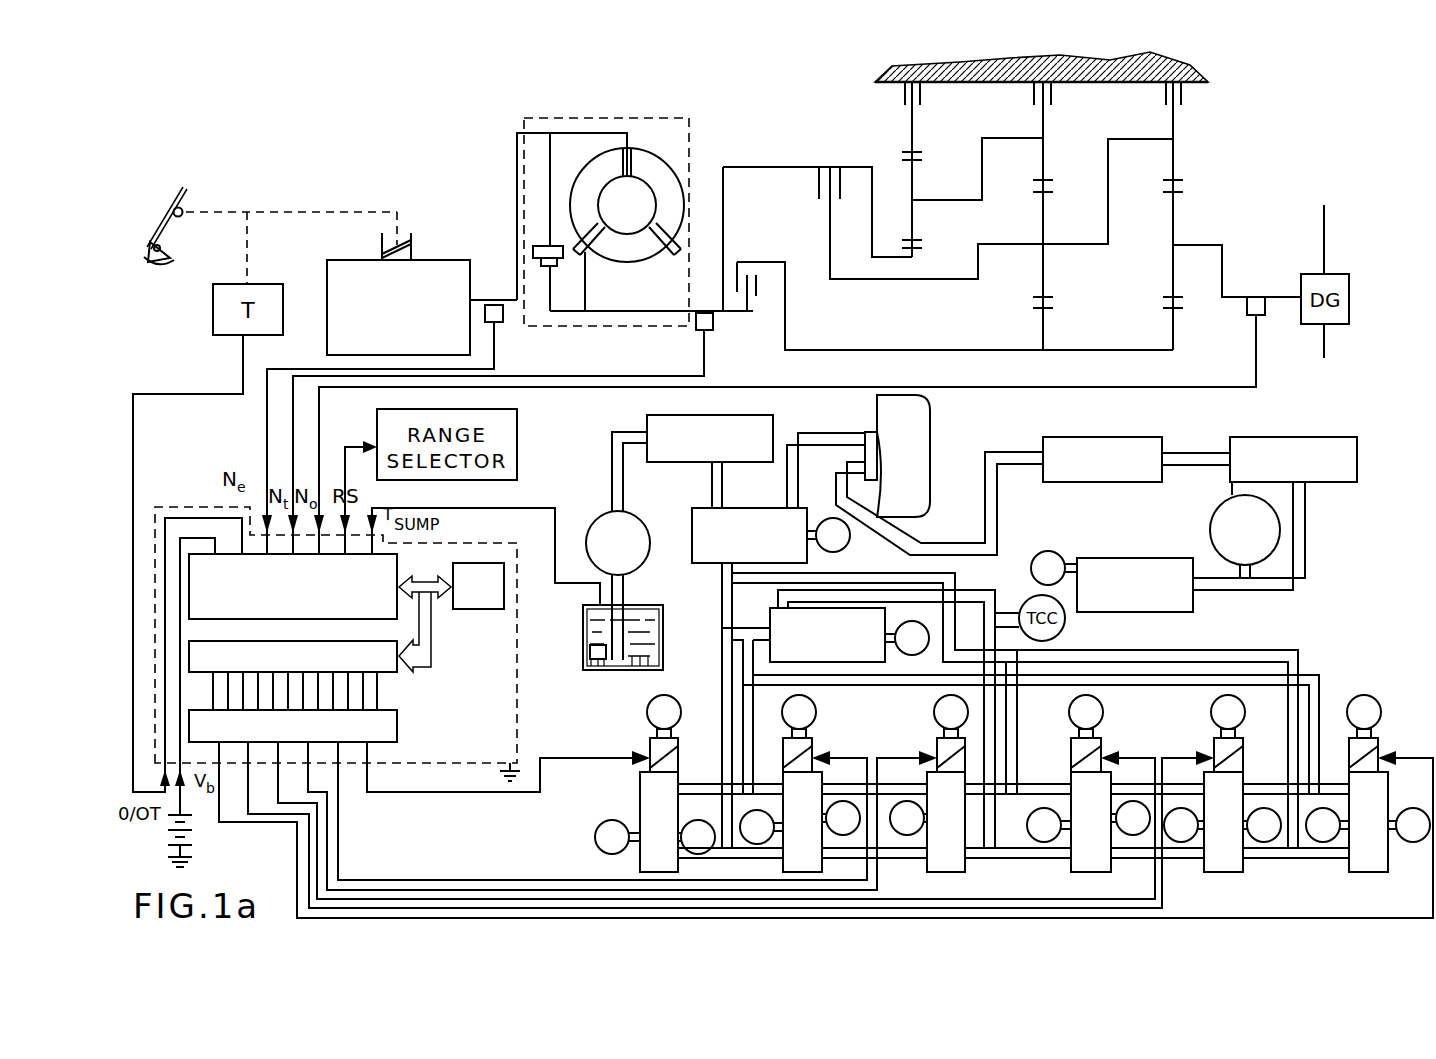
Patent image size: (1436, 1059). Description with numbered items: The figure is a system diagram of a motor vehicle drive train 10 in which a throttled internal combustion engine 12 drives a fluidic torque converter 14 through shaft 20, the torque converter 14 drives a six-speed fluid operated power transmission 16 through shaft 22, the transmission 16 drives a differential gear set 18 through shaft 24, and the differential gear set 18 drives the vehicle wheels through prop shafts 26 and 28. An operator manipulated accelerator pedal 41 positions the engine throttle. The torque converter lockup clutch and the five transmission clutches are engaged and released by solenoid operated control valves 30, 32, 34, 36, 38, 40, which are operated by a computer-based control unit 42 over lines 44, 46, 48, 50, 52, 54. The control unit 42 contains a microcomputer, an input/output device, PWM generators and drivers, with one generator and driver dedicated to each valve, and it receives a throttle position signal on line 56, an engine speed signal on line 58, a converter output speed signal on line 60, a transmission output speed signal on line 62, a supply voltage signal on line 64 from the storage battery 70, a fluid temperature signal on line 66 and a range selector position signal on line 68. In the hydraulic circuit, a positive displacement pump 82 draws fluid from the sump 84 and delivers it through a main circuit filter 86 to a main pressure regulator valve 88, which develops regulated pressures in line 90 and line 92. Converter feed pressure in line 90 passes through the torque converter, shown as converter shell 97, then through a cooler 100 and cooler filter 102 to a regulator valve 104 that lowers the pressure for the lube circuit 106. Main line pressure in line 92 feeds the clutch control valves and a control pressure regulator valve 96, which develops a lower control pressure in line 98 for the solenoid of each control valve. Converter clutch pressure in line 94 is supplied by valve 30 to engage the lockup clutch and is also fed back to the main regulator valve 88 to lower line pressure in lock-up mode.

The motor vehicle drive train 10 is at (437, 160).
The internal combustion engine 12 is at (432, 268).
The fluidic torque converter 14 is at (538, 116).
The power transmission 16 is at (812, 150).
The differential gear set 18 is at (1310, 312).
The shaft 20 is at (516, 283).
The shaft 22 is at (713, 330).
The shaft 24 is at (1222, 265).
The prop shaft 26 is at (1325, 228).
The prop shaft 28 is at (1325, 342).
The solenoid operated control valve 30 is at (925, 805).
The solenoid operated control valve 32 is at (648, 810).
The solenoid operated control valve 34 is at (825, 790).
The solenoid operated control valve 36 is at (1100, 850).
The solenoid operated control valve 38 is at (1220, 870).
The solenoid operated control valve 40 is at (1375, 868).
The accelerator pedal 41 is at (162, 213).
The control unit 42 is at (522, 668).
The line 44 is at (330, 805).
The line 46 is at (428, 792).
The line 48 is at (460, 880).
The line 50 is at (320, 823).
The line 52 is at (280, 800).
The line 54 is at (297, 873).
The line 56 is at (133, 515).
The line 58 is at (265, 393).
The line 60 is at (292, 454).
The line 62 is at (320, 422).
The line 64 is at (183, 797).
The line 66 is at (515, 508).
The line 68 is at (344, 475).
The storage battery 70 is at (176, 822).
The positive displacement pump 82 is at (641, 540).
The sump 84 is at (582, 655).
The main circuit filter 86 is at (690, 420).
The main pressure regulator valve 88 is at (776, 518).
The line 90 is at (817, 440).
The line 92 is at (722, 650).
The line 94 is at (845, 595).
The control pressure regulator valve 96 is at (830, 670).
The converter shell 97 is at (900, 430).
The line 98 is at (748, 723).
The cooler 100 is at (1105, 438).
The cooler filter 102 is at (1340, 450).
The regulator valve 104 is at (1182, 590).
The lube circuit 106 is at (1240, 505).